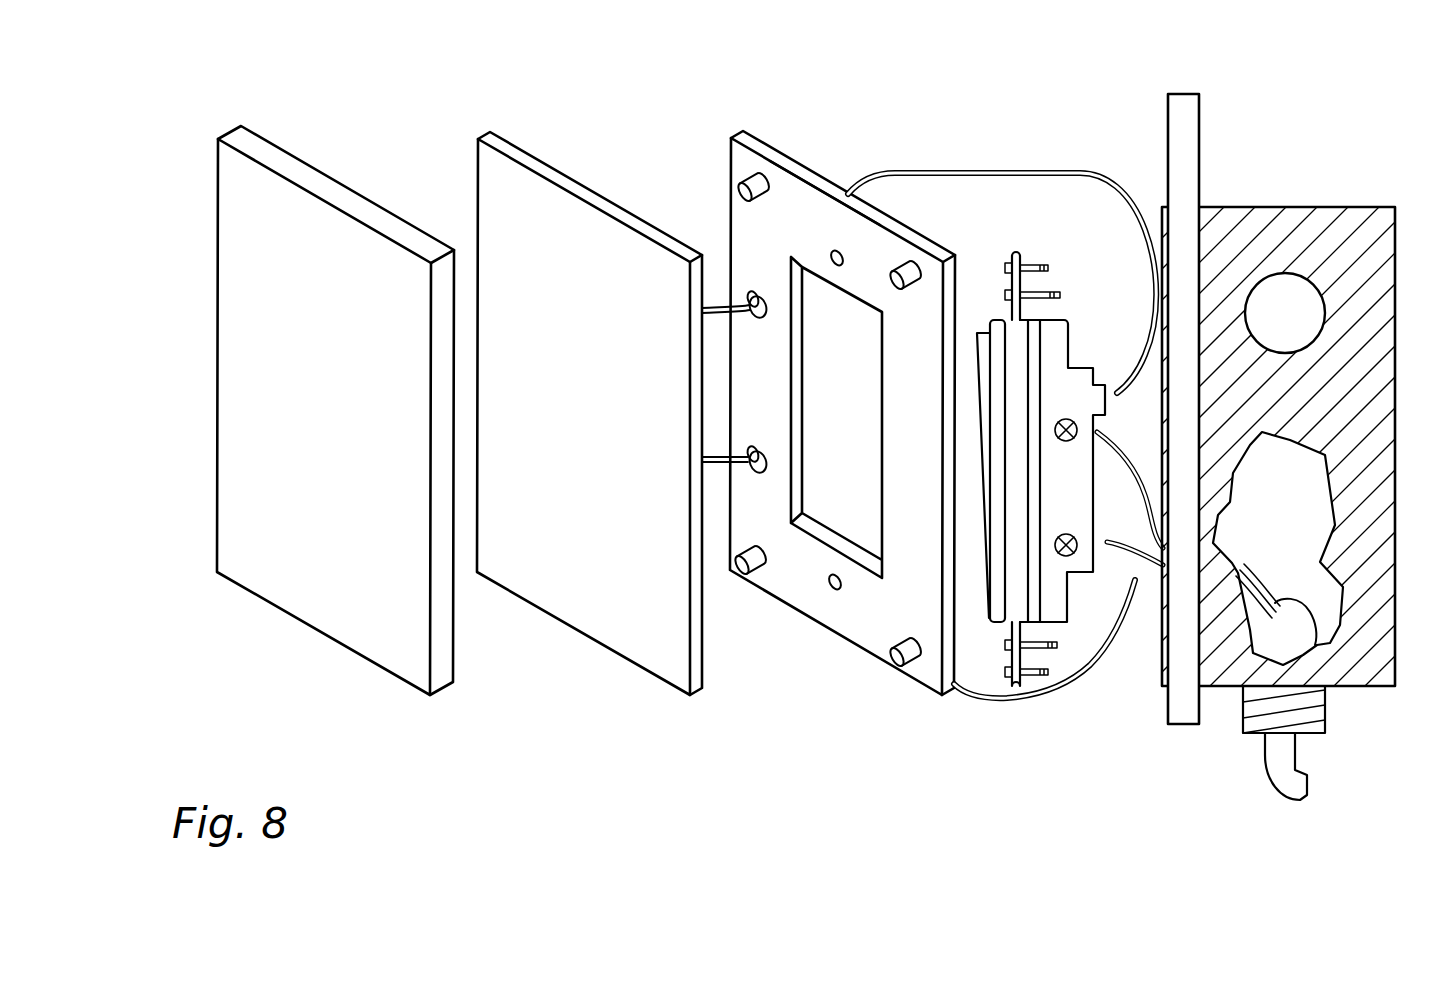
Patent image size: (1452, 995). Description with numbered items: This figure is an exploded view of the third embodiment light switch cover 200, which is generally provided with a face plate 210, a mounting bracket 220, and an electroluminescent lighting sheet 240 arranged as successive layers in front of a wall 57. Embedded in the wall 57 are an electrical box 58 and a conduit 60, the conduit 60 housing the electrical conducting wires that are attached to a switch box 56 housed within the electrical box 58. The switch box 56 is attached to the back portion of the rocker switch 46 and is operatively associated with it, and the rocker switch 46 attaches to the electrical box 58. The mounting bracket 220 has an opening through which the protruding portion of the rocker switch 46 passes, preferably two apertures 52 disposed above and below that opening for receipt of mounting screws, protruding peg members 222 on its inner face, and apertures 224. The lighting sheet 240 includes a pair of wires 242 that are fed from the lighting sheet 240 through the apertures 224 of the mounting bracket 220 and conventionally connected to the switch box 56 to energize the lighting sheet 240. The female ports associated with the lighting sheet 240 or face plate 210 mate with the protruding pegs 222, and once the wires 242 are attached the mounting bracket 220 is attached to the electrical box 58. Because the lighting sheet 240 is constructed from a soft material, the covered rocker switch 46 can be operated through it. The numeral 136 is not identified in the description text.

The light switch cover 200 is at (588, 108).
The face plate 210 is at (370, 543).
The electroluminescent lighting sheet 240 is at (620, 455).
The mounting bracket 220 is at (828, 238).
The mounting plate edge 136 is at (828, 190).
The protruding peg members 222 is at (758, 182).
The apertures 224 is at (755, 293).
The wires 242 is at (1105, 190).
The apertures 52 is at (841, 251).
The rocker switch 46 is at (1037, 320).
The switch box 56 is at (1093, 478).
The wall 57 is at (1168, 715).
The electrical box 58 is at (1365, 405).
The conduit 60 is at (1325, 712).